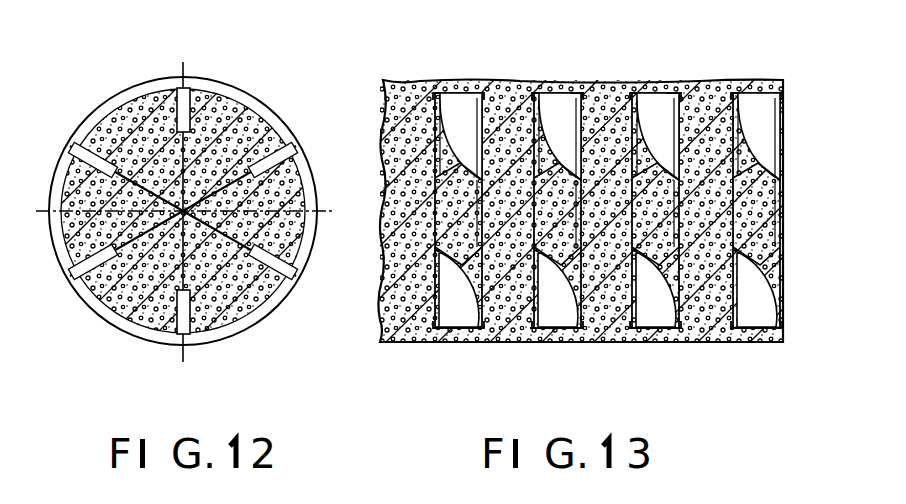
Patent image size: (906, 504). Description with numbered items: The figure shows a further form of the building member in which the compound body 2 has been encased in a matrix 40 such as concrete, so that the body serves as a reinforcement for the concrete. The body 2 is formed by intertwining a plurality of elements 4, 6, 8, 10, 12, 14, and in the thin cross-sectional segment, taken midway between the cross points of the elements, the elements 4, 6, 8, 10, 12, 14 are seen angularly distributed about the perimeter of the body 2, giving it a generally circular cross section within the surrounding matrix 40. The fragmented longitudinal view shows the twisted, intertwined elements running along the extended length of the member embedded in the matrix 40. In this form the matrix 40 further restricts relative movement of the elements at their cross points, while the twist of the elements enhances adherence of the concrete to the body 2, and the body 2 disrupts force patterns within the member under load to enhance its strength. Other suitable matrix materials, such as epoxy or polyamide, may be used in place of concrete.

In FIG. 13, the member body 2 is at (788, 101).
In FIG. 12, the element 4 is at (88, 143).
In FIG. 13, the element 4 is at (531, 94).
In FIG. 12, the element 6 is at (190, 100).
In FIG. 13, the element 6 is at (470, 94).
In FIG. 12, the element 8 is at (270, 150).
In FIG. 13, the element 8 is at (432, 95).
In FIG. 12, the element 10 is at (268, 280).
In FIG. 13, the element 10 is at (574, 94).
In FIG. 12, the element 12 is at (175, 310).
In FIG. 13, the element 12 is at (631, 94).
In FIG. 12, the element 14 is at (100, 287).
In FIG. 13, the element 14 is at (677, 94).
In FIG. 12, the matrix 40 is at (222, 308).
In FIG. 13, the matrix 40 is at (785, 186).